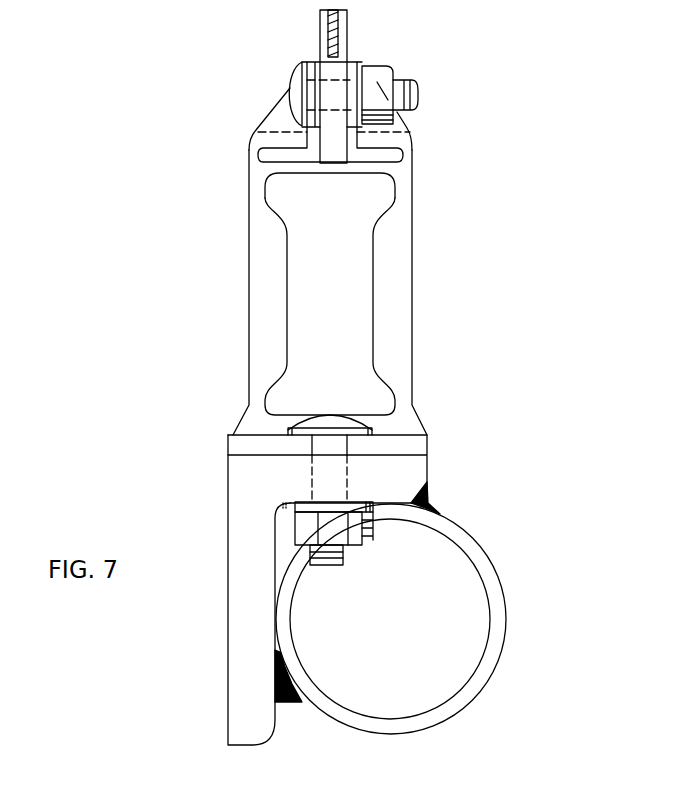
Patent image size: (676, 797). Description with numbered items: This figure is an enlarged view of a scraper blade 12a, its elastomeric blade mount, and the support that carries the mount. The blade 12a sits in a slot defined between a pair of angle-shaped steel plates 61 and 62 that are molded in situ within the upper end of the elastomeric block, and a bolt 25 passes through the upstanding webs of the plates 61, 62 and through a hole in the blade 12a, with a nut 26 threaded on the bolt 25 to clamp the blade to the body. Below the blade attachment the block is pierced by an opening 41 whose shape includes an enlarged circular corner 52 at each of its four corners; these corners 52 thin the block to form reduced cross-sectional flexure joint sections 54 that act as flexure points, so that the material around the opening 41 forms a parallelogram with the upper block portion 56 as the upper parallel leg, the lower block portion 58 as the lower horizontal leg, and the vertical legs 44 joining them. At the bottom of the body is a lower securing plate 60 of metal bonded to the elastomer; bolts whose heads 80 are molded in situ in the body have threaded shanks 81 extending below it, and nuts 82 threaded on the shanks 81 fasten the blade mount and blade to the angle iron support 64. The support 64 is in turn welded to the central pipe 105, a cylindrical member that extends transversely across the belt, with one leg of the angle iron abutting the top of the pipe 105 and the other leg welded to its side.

The scraper blade 12a is at (340, 32).
The bolt 25 is at (293, 80).
The nut 26 is at (382, 70).
The opening 41 is at (357, 283).
The vertical legs 44 is at (262, 313).
The enlarged circular corner 52 is at (267, 200).
The reduced cross-sectional flexure joint sections 54 is at (258, 190).
The upper block portion 56 is at (332, 157).
The lower block portion 58 is at (288, 420).
The lower securing plate 60 is at (237, 445).
The angle-shaped plate 61 is at (287, 152).
The angle-shaped plate 62 is at (393, 150).
The angle iron support 64 is at (236, 627).
The bolt head 80 is at (338, 418).
The threaded bolt shank 81 is at (342, 557).
The nut 82 is at (367, 527).
The pipe 105 is at (467, 543).